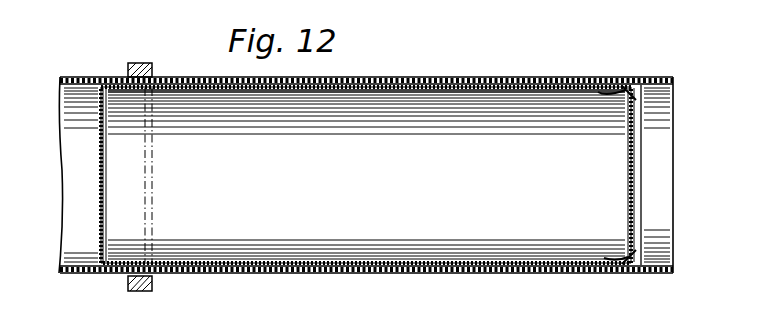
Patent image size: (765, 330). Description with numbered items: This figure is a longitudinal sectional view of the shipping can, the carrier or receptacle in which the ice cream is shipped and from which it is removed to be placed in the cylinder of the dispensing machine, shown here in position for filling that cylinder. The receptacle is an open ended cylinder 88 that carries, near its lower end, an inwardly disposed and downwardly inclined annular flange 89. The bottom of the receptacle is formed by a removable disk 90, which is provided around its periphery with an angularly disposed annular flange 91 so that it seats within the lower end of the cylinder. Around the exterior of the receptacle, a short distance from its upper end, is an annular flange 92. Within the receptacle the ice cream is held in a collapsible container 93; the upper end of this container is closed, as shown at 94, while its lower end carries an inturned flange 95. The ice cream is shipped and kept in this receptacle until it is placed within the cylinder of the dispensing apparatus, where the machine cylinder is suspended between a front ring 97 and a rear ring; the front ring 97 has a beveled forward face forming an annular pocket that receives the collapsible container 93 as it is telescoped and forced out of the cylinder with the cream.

The open ended cylinder 88 is at (452, 84).
The inwardly disposed downwardly inclined annular flange 89 is at (644, 80).
The removable disk 90 is at (628, 172).
The angularly disposed annular flange 91 is at (600, 95).
The annular flange 92 is at (152, 73).
The collapsible container 93 is at (380, 81).
The closed upper end 94 is at (107, 180).
The inturned flange 95 is at (618, 253).
The front ring 97 is at (147, 57).